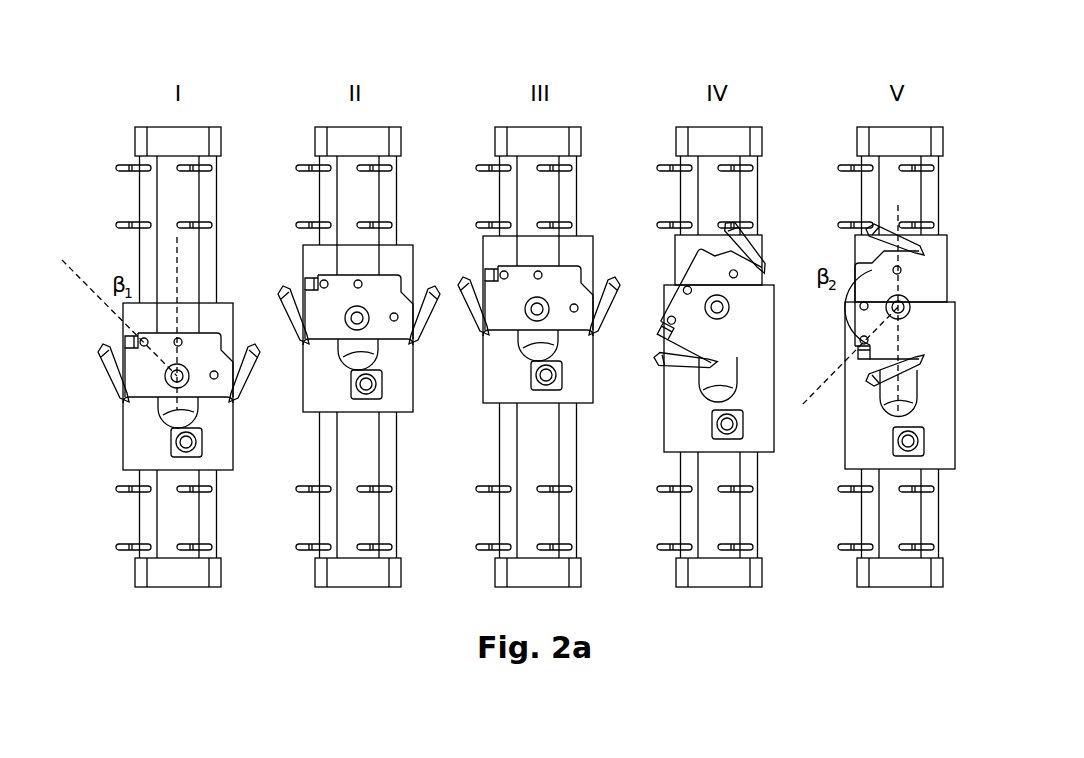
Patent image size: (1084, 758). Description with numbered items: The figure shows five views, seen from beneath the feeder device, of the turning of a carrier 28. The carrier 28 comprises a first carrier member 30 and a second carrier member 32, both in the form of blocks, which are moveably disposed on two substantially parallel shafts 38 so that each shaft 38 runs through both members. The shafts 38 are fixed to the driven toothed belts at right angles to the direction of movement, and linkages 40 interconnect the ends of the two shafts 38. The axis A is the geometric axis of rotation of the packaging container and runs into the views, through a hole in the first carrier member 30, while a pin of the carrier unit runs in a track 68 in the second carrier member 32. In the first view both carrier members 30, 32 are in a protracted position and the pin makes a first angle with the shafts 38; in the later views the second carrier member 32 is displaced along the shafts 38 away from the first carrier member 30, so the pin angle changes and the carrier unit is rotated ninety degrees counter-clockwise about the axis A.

The carrier 28 is at (102, 235).
The first carrier member 30 is at (183, 317).
The second carrier member 32 is at (132, 441).
The shafts 38 is at (207, 205).
The linkages 40 is at (729, 142).
The track 68 is at (125, 344).
The axis of rotation A is at (170, 380).